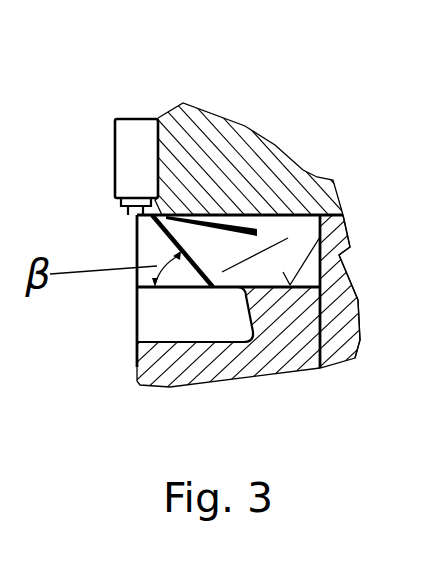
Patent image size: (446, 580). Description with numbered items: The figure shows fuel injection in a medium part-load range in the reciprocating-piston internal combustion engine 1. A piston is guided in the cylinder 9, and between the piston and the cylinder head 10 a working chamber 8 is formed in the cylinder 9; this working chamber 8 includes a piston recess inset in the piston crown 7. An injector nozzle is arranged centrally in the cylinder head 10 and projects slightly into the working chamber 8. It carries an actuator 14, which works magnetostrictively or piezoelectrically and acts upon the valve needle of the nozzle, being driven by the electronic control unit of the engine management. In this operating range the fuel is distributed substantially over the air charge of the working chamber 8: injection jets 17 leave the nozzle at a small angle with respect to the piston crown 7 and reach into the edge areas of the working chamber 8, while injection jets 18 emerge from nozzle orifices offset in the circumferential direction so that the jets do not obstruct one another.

The reciprocating-piston internal combustion engine 1 is at (392, 286).
The piston crown 7 is at (343, 215).
The working chamber 8 is at (144, 229).
The cylinder 9 is at (338, 345).
The cylinder head 10 is at (271, 155).
The actuator 14 is at (147, 128).
The injection jets 17 is at (242, 228).
The injection jets 18 is at (288, 238).